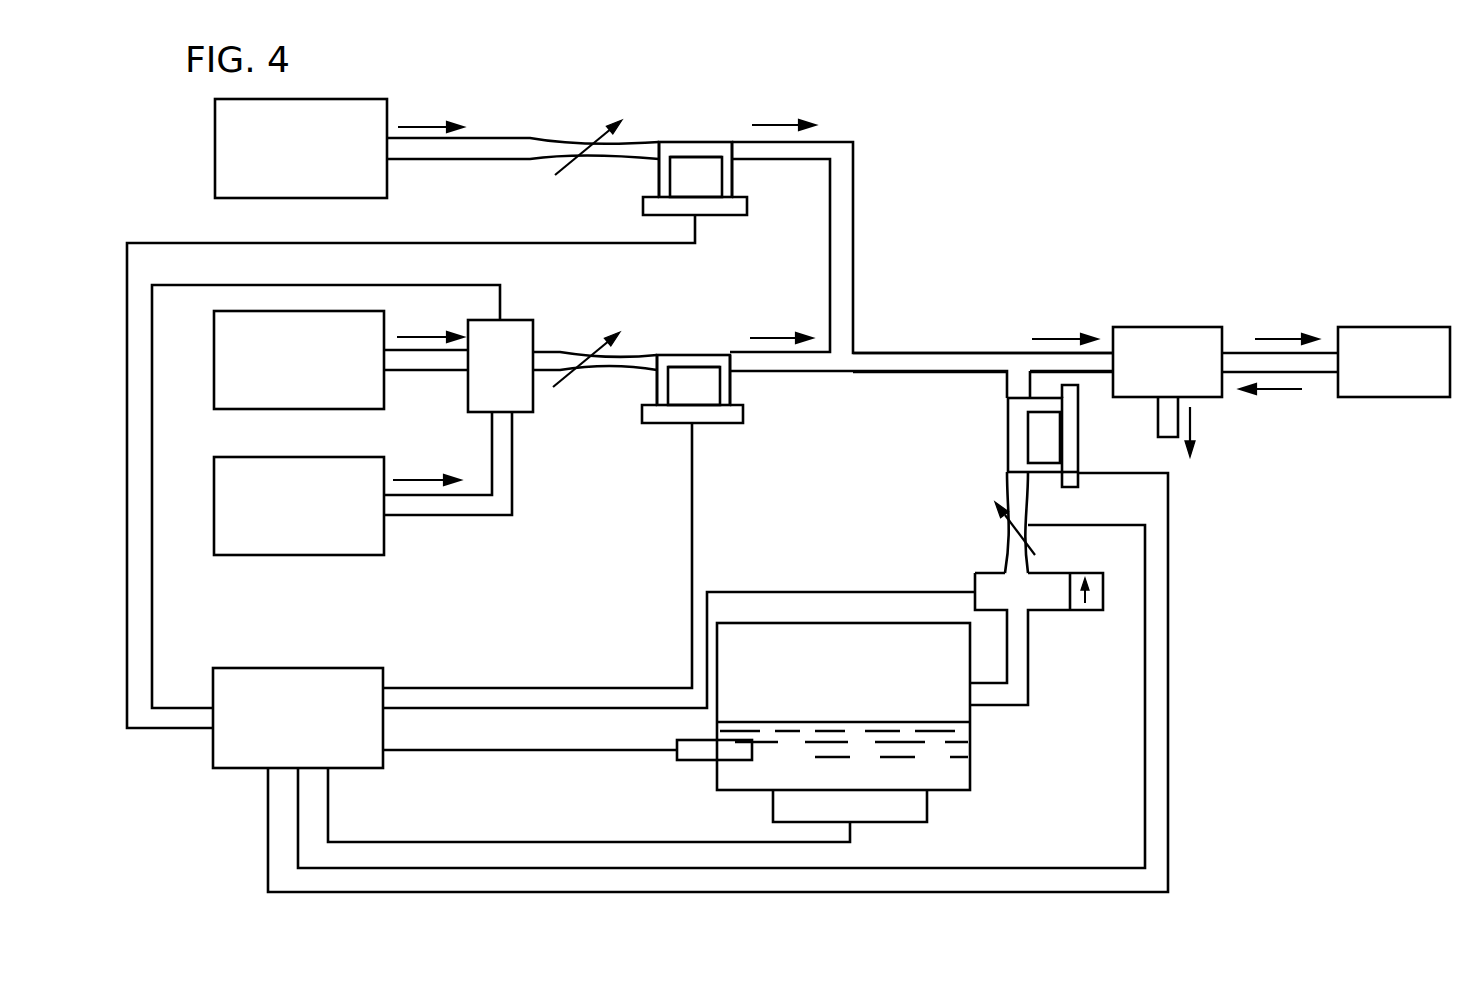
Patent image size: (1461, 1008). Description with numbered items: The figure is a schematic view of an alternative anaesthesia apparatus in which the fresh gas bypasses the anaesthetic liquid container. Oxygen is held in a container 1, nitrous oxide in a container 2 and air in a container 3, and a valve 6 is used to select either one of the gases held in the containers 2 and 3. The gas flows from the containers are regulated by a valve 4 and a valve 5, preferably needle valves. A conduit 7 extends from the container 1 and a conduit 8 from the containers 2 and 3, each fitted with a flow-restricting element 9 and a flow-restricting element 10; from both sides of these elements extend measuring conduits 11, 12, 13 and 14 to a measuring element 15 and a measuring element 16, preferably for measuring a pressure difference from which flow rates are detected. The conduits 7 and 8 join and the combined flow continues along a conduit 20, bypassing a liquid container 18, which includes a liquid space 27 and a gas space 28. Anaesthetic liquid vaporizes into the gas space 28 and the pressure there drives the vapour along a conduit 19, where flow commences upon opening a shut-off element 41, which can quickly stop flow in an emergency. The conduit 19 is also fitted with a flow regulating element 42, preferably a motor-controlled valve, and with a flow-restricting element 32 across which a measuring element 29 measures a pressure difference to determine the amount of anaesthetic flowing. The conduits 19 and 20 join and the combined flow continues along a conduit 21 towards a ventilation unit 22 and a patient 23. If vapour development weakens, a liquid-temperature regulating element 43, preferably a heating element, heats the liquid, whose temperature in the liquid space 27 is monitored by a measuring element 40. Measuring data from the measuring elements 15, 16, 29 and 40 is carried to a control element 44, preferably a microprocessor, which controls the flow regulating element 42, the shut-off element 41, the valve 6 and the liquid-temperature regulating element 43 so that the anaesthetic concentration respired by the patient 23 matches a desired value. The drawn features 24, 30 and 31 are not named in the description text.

The container 1 is at (215, 162).
The container 2 is at (214, 370).
The container 3 is at (214, 510).
The valve 4 is at (573, 148).
The valve 5 is at (570, 350).
The valve 6 is at (520, 320).
The conduit 7 is at (647, 142).
The conduit 8 is at (638, 360).
The flow-restricting element 9 is at (700, 157).
The flow-restricting element 10 is at (702, 367).
The measuring conduit 11 is at (658, 183).
The measuring conduit 12 is at (733, 184).
The measuring conduit 13 is at (657, 383).
The measuring conduit 14 is at (732, 390).
The measuring element 15 is at (736, 212).
The measuring element 16 is at (680, 425).
The liquid container 18 is at (850, 609).
The conduit 19 is at (1012, 470).
The conduit 20 is at (955, 353).
The conduit 21 is at (1097, 350).
The ventilation unit 22 is at (1175, 327).
The patient 23 is at (1375, 327).
The discharge outlet 24 is at (1187, 413).
The liquid space 27 is at (955, 773).
The gas space 28 is at (747, 674).
The measuring element 29 is at (1078, 437).
The drain valve control line 30 is at (1045, 478).
The drain valve 31 is at (1042, 400).
The flow-restricting element 32 is at (1018, 452).
The measuring element 40 is at (700, 760).
The shut-off element 41 is at (1090, 610).
The flow regulating element 42 is at (1010, 540).
The liquid-temperature regulating element 43 is at (925, 810).
The control element 44 is at (213, 685).